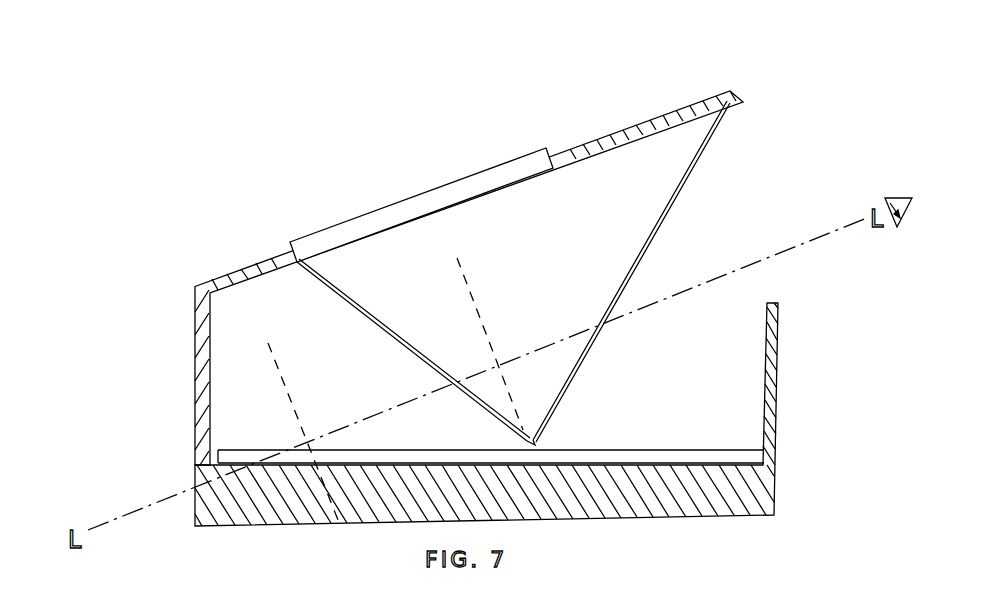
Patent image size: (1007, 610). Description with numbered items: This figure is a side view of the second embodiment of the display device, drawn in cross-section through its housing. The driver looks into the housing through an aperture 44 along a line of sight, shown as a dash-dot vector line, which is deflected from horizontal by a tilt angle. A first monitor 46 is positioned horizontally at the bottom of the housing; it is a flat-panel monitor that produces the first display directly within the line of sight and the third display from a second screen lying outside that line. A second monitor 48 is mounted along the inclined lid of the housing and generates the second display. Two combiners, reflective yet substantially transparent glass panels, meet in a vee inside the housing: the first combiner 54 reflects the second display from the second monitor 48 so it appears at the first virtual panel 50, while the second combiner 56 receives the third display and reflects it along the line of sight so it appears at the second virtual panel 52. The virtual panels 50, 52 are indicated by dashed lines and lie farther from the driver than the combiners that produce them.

The aperture 44 is at (771, 155).
The first monitor 46 is at (652, 448).
The second monitor 48 is at (437, 190).
The first virtual panel 50 is at (290, 363).
The second virtual panel 52 is at (485, 287).
The first combiner 54 is at (338, 289).
The second combiner 56 is at (647, 220).